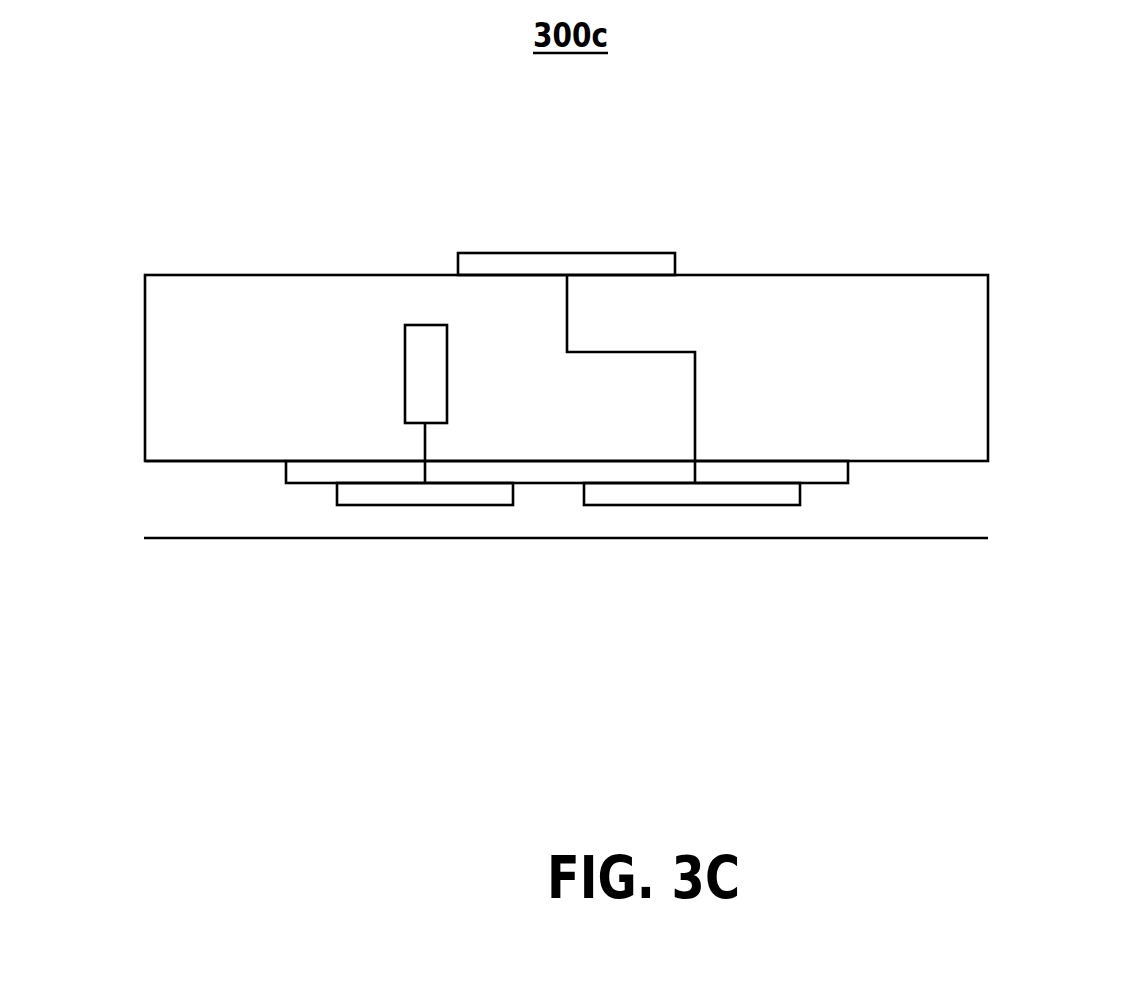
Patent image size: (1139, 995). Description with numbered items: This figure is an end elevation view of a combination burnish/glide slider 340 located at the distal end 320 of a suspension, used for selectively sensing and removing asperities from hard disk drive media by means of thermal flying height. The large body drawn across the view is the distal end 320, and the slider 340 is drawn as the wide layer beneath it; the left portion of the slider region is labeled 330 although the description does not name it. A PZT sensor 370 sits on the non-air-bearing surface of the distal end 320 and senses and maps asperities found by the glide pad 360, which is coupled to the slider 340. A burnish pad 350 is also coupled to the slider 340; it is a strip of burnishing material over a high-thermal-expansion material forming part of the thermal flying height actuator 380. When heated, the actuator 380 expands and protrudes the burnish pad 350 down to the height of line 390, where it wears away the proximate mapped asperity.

The distal end 320 is at (811, 364).
The first bottom surface portion 330 is at (187, 463).
The combination burnish/glide slider 340 is at (850, 472).
The burnish pad 350 is at (407, 505).
The glide pad 360 is at (757, 505).
The PZT sensor 370 is at (600, 253).
The thermal flying height actuator 380 is at (425, 325).
The line 390 is at (597, 538).